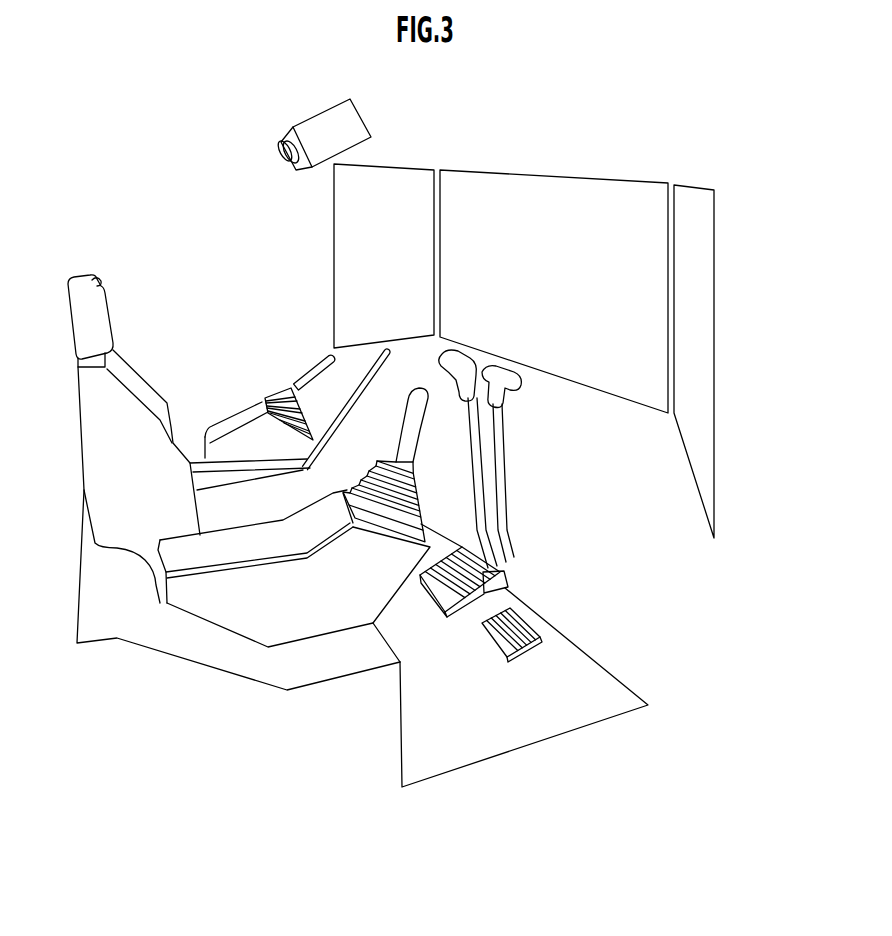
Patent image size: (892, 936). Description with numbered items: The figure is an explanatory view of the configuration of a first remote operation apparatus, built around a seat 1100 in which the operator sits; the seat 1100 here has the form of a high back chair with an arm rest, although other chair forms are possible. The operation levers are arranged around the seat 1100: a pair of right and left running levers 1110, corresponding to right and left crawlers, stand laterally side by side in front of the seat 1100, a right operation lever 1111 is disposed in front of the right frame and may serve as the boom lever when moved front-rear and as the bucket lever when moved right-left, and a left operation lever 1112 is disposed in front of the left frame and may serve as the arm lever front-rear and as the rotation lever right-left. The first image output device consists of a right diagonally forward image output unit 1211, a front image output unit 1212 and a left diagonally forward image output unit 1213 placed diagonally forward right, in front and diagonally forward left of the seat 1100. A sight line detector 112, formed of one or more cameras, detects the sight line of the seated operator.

The seat 1100 is at (160, 258).
The sight line detector 112 is at (315, 116).
The left diagonally forward image output unit 1213 is at (400, 165).
The front image output unit 1212 is at (553, 174).
The right diagonally forward image output unit 1211 is at (706, 188).
The left operation lever 1112 is at (326, 358).
The right operation lever 1111 is at (427, 415).
The running levers 1110 is at (510, 455).